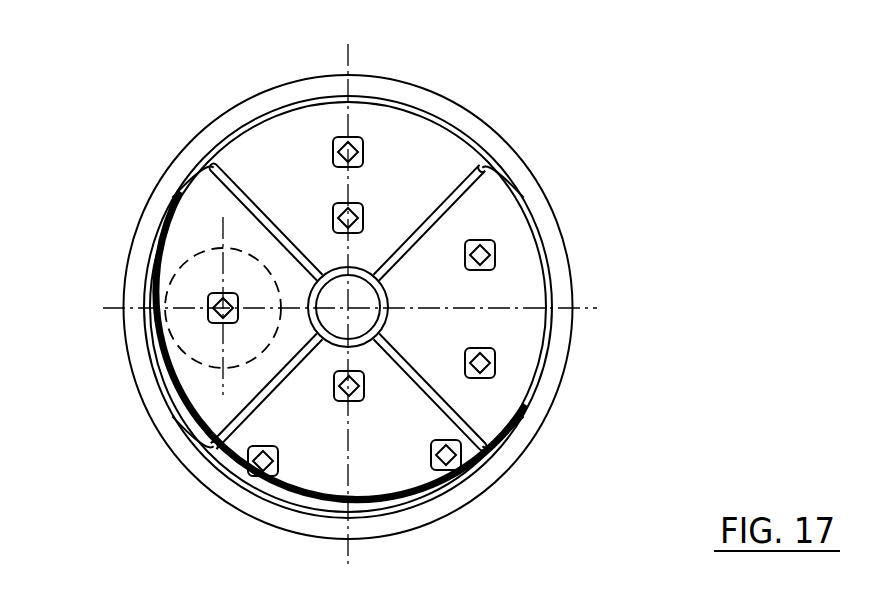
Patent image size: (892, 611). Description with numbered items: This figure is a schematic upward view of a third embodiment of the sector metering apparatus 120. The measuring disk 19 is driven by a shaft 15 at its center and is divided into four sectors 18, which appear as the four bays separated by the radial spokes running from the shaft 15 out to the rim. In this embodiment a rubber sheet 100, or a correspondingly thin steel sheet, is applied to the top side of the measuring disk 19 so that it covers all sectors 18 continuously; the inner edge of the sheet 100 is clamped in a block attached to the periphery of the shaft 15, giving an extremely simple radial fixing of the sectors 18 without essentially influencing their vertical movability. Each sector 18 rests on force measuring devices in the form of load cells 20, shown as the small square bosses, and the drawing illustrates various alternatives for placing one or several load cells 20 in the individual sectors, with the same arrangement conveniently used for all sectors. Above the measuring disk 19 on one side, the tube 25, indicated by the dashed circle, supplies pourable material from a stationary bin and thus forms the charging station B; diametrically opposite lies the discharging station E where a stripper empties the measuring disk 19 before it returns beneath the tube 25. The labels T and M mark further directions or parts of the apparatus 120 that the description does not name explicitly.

The shaft 15 is at (378, 296).
The sectors 18 is at (500, 150).
The measuring disk 19 is at (552, 187).
The load cells 20 is at (333, 216).
The tube 25 is at (200, 372).
The rubber sheet 100 is at (407, 277).
The sector metering apparatus 120 is at (490, 92).
The tread T is at (436, 82).
The charging station B is at (110, 289).
The disk discharging station E is at (582, 370).
The direction M is at (446, 533).